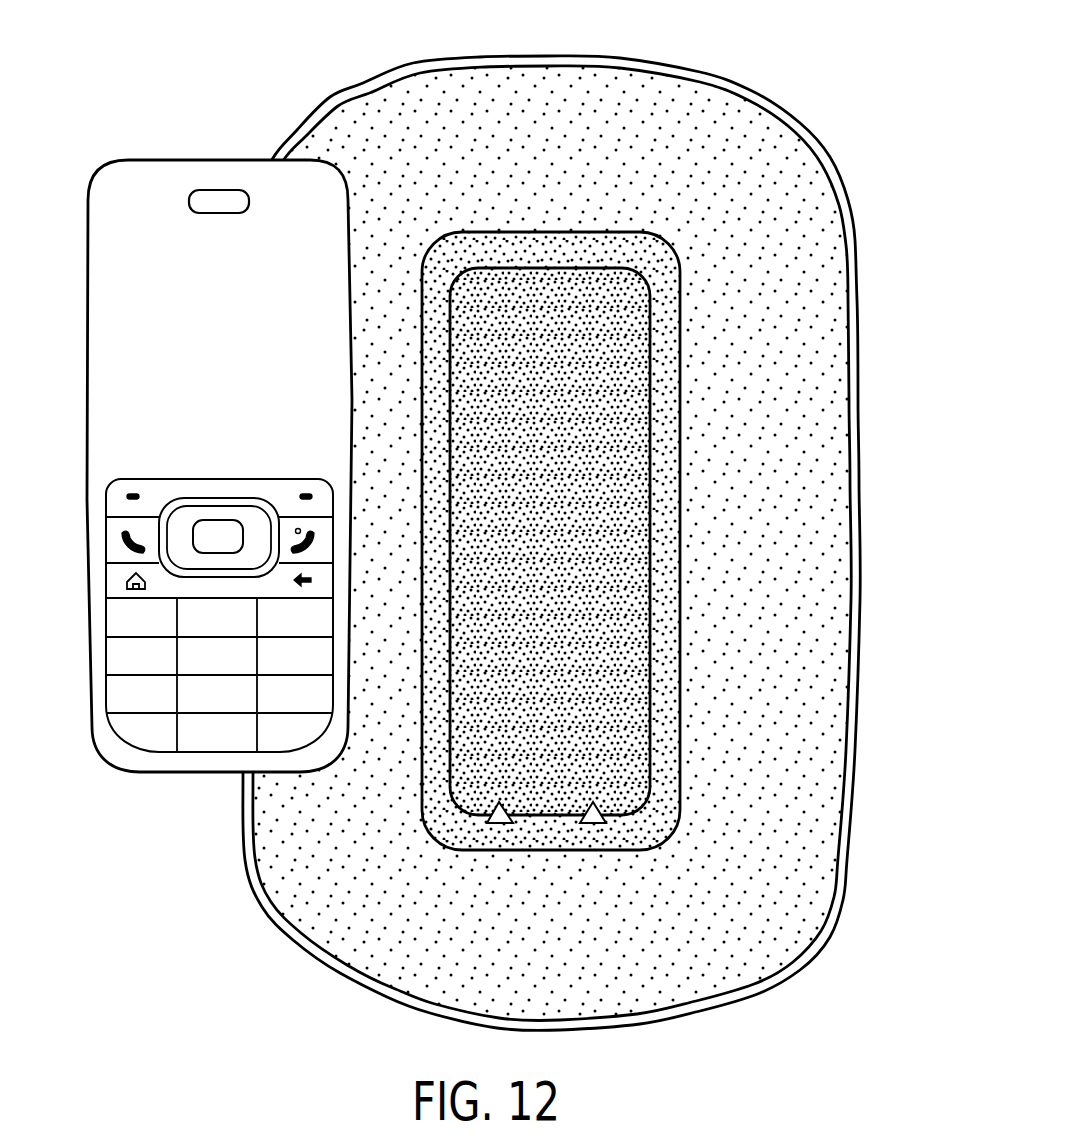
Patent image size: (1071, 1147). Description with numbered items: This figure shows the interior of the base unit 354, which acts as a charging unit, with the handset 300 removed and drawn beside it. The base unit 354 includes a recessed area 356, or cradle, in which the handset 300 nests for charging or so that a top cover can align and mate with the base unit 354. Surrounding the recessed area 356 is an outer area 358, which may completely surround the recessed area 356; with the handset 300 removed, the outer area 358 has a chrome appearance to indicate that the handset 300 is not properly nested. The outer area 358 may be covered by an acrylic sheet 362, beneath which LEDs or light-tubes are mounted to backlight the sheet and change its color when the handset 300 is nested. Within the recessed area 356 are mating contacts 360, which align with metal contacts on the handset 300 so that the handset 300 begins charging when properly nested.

The handset 300 is at (193, 316).
The base unit 354 is at (752, 92).
The recessed area 356 is at (607, 482).
The outer area 358 is at (813, 872).
The contacts 360 is at (498, 824).
The acrylic sheet 362 is at (792, 673).